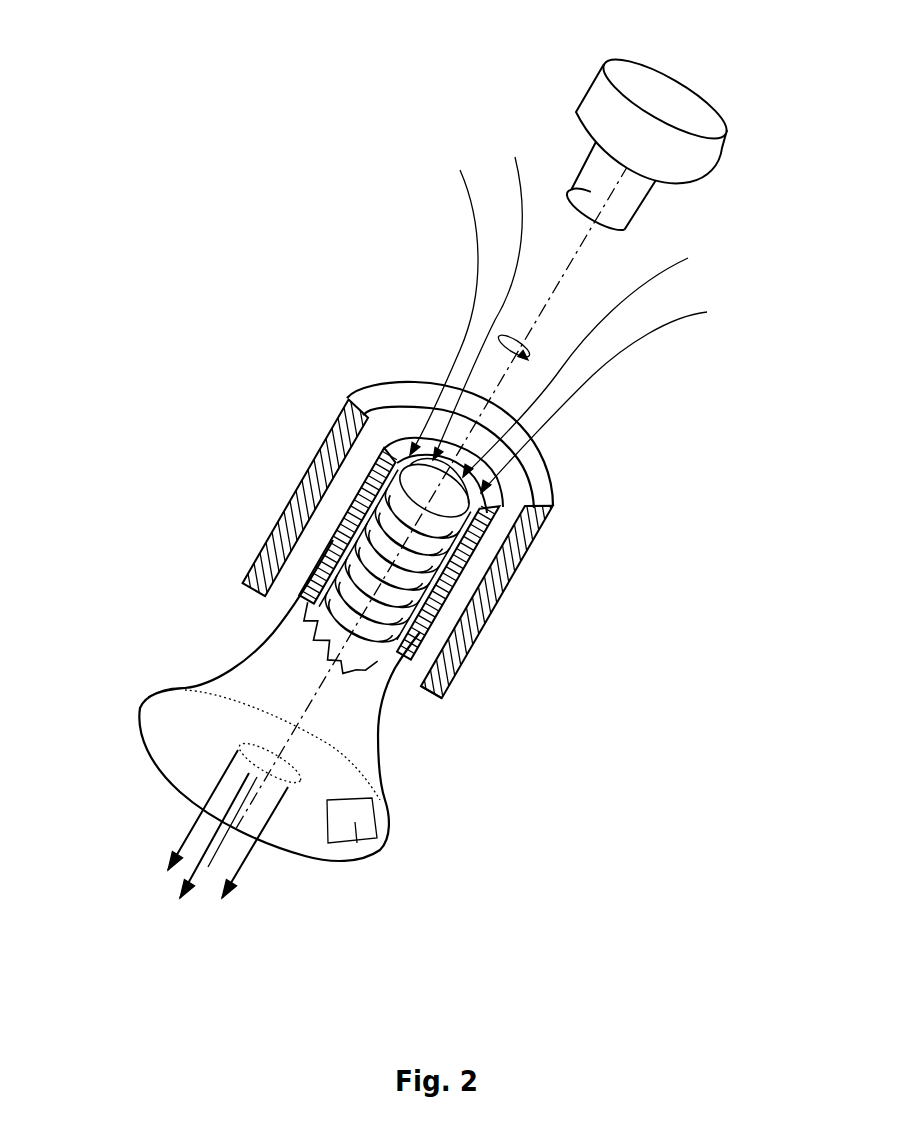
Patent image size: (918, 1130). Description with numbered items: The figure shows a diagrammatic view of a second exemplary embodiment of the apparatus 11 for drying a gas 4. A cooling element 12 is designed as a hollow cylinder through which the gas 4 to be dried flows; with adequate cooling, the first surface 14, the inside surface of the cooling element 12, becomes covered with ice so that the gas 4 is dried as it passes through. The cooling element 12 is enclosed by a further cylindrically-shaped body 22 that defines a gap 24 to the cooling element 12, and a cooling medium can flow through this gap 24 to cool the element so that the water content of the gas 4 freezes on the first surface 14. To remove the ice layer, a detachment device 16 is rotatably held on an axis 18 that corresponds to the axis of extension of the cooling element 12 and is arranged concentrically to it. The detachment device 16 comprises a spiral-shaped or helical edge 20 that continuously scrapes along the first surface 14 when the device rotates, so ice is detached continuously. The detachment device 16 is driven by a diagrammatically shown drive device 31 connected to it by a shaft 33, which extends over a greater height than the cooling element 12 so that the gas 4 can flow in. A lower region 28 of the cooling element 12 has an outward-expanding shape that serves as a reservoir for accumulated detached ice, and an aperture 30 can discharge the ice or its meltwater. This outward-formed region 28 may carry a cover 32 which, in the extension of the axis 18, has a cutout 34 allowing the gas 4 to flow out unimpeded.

The apparatus 11 is at (325, 147).
The drive device 31 is at (692, 158).
The shaft 33 is at (598, 168).
The gas 4 is at (533, 373).
The gap 24 is at (512, 497).
The spiral-shaped or helical edge 20 is at (372, 502).
The cylindrically-shaped body 22 is at (500, 577).
The detachment device 16 is at (453, 666).
The first surface 14 is at (460, 530).
The cooling element 12 is at (357, 538).
The lower region 28 is at (155, 648).
The cover 32 is at (155, 728).
The cutout 34 is at (290, 771).
The axis 18 is at (216, 853).
The aperture 30 is at (355, 822).